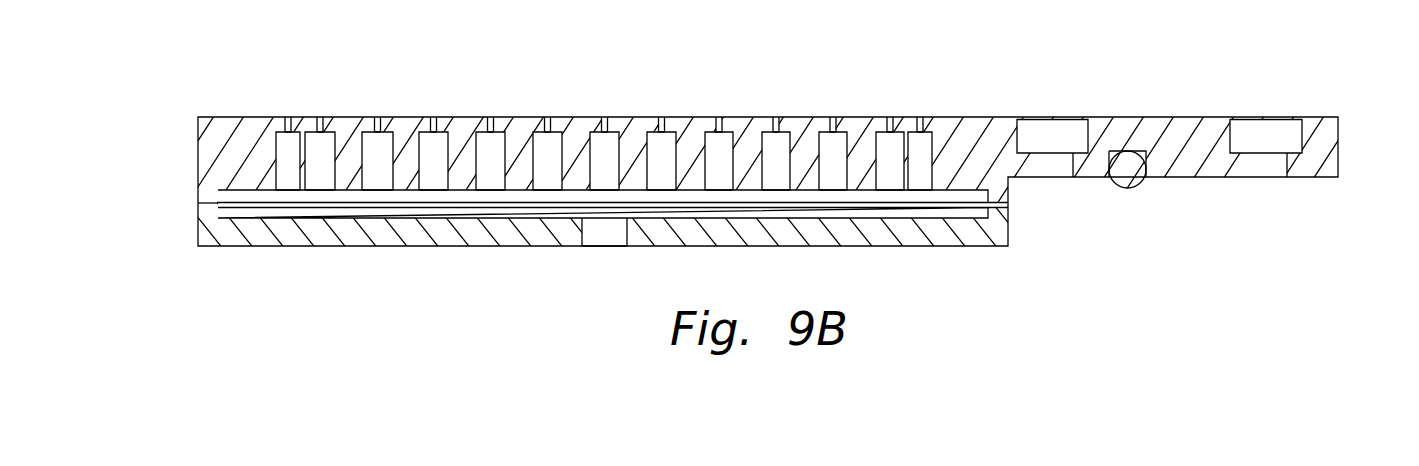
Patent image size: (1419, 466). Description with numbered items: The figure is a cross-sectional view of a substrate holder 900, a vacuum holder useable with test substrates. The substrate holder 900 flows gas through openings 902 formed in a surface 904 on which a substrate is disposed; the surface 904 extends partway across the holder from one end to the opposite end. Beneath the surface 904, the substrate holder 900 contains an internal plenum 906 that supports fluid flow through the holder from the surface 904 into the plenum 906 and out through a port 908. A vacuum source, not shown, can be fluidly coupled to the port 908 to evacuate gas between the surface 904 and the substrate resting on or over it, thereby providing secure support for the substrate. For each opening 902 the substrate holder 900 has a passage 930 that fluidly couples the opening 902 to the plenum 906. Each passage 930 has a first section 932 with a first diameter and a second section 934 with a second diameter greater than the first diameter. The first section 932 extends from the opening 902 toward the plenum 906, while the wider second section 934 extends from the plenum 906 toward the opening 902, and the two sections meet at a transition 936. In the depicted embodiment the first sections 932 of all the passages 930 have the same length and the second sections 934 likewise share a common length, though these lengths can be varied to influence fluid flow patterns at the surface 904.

The substrate holder 900 is at (1238, 43).
The openings 902 is at (377, 127).
The surface 904 is at (690, 92).
The internal plenum 906 is at (459, 210).
The port 908 is at (599, 232).
The passage 930 is at (287, 162).
The first section 932 is at (548, 128).
The second section 934 is at (435, 180).
The transition 936 is at (466, 138).